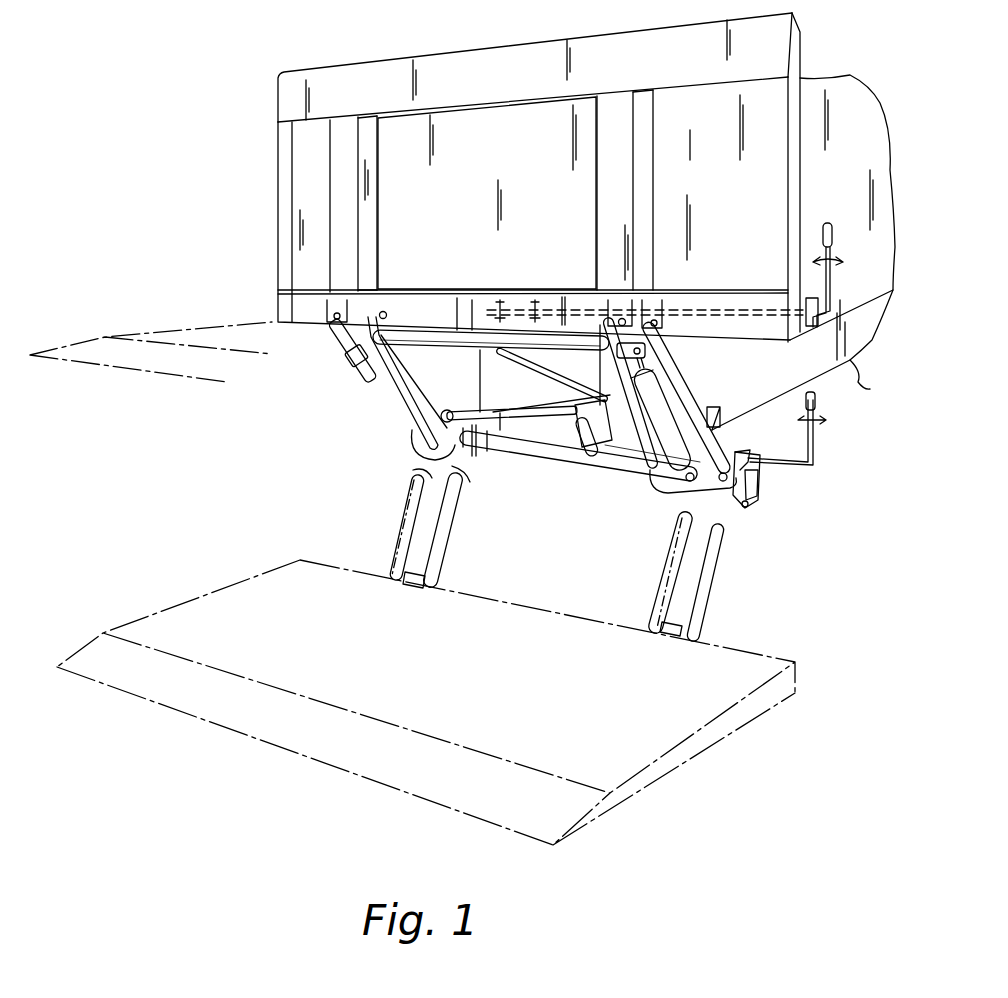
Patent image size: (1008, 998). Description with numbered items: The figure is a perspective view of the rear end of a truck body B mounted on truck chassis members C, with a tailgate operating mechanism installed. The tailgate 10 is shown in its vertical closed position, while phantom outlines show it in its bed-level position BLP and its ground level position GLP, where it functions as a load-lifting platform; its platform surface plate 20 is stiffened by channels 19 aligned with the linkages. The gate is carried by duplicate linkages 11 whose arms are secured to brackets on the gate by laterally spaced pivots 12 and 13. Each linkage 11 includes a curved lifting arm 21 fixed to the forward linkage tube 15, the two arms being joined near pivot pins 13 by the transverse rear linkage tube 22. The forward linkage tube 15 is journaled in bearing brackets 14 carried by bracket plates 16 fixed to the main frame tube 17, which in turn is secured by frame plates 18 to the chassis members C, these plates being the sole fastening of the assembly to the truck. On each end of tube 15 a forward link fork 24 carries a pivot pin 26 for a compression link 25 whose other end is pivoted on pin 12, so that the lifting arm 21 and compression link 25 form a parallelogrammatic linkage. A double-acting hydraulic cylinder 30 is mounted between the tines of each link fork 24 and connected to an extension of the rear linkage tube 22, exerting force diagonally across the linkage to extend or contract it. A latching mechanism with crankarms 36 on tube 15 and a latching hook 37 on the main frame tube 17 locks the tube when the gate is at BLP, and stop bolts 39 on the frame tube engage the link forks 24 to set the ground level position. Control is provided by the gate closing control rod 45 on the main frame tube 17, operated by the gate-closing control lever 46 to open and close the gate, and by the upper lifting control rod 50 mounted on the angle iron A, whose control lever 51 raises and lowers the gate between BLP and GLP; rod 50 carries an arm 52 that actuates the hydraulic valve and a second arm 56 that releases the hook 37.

The tailgate 10 is at (515, 42).
The linkages 11 is at (533, 449).
The pivots 12 is at (330, 318).
The pivots 13 is at (390, 314).
The bearing brackets 14 is at (478, 448).
The forward linkage tube 15 is at (612, 456).
The bracket plates 16 is at (477, 450).
The main frame tube 17 is at (540, 452).
The frame plates 18 is at (509, 410).
The channels 19 is at (370, 186).
The platform surface plate 20 is at (500, 186).
The lifting arm 21 is at (388, 410).
The rear linkage tube 22 is at (464, 346).
The forward link fork 24 is at (742, 446).
The compression link 25 is at (347, 340).
The pivot pin 26 is at (752, 484).
The double-acting hydraulic cylinder 30 is at (368, 380).
The crankarms 36 is at (588, 452).
The latching hook 37 is at (573, 418).
The stop bolts 39 is at (745, 507).
The gate closing control rod 45 is at (790, 468).
The gate-closing control lever 46 is at (816, 440).
The upper lifting control rod 50 is at (733, 308).
The control lever 51 is at (832, 280).
The arm 52 is at (536, 300).
The second arm 56 is at (500, 300).
The angle iron A is at (809, 359).
The truck body B is at (838, 102).
The truck chassis members C is at (464, 378).
The bed-level position BLP is at (197, 332).
The ground level position GLP is at (192, 600).